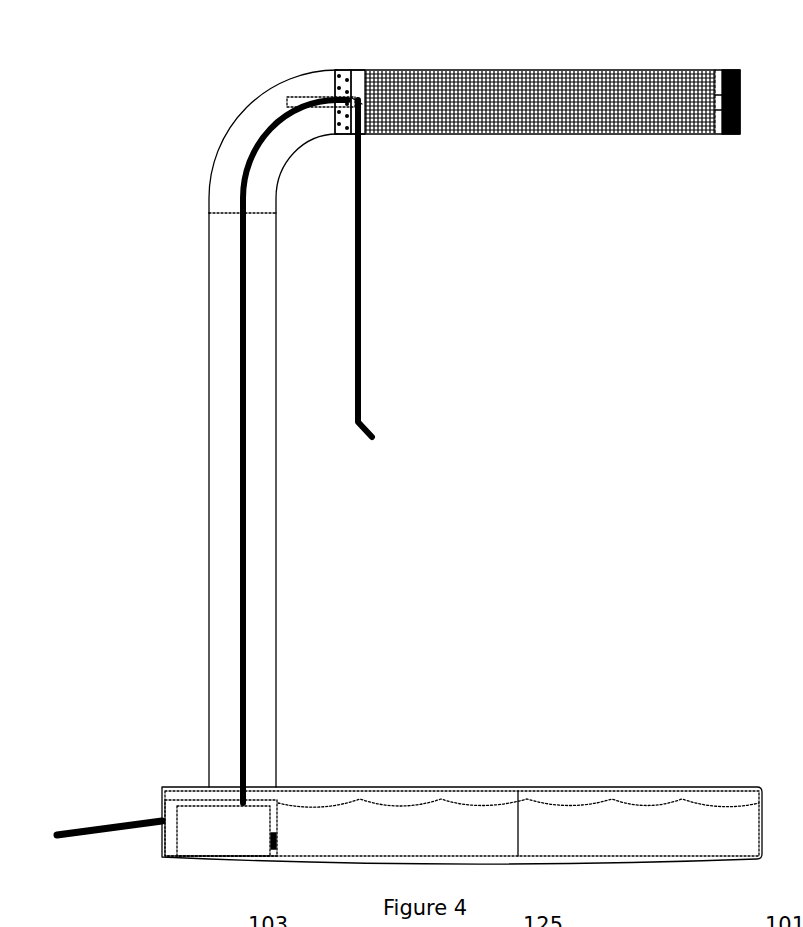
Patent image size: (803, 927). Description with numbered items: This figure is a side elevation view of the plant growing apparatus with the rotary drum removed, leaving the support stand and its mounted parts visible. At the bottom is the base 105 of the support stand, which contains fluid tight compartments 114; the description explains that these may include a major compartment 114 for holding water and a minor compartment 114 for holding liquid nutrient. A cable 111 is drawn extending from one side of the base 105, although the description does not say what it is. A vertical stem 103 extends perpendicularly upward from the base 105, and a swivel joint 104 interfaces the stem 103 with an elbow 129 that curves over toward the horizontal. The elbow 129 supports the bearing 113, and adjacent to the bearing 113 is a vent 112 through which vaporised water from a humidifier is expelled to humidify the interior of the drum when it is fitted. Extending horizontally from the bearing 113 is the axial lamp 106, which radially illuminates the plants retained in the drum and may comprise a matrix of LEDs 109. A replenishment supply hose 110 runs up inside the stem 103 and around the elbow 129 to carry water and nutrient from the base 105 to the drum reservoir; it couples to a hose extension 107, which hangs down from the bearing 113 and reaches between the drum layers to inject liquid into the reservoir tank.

The vertical stem 103 is at (209, 424).
The swivel joint 104 is at (209, 207).
The base 105 is at (653, 787).
The axial lamp 106 is at (510, 70).
The hose extension 107 is at (362, 330).
The LEDs 109 is at (630, 78).
The replenishment supply hose 110 is at (246, 514).
The power cable 111 is at (100, 824).
The vent 112 is at (358, 72).
The bearing 113 is at (343, 72).
The fluid tight compartment 114 is at (412, 841).
The elbow 129 is at (238, 110).